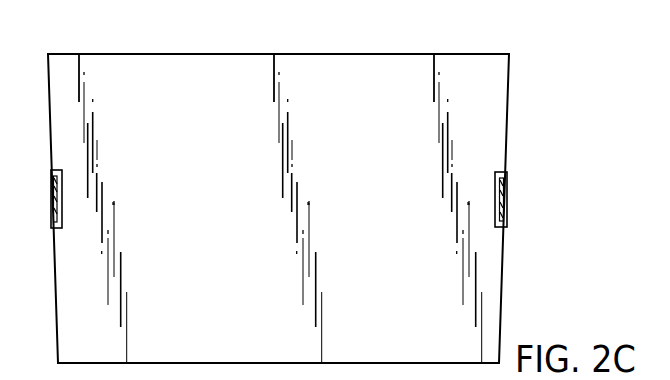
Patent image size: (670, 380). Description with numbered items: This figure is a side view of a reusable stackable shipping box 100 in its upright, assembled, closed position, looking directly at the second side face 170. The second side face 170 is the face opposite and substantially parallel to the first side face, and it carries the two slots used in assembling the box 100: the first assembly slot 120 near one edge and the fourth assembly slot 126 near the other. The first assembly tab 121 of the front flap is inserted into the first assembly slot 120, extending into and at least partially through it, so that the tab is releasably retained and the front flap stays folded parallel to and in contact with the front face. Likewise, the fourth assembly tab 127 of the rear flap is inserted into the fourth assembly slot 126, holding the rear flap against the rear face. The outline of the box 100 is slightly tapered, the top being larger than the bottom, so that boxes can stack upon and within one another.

The box 100 is at (584, 83).
The first assembly slot 120 is at (497, 175).
The first assembly tab 121 is at (504, 198).
The fourth assembly slot 126 is at (61, 216).
The fourth assembly tab 127 is at (53, 205).
The second side face 170 is at (258, 233).